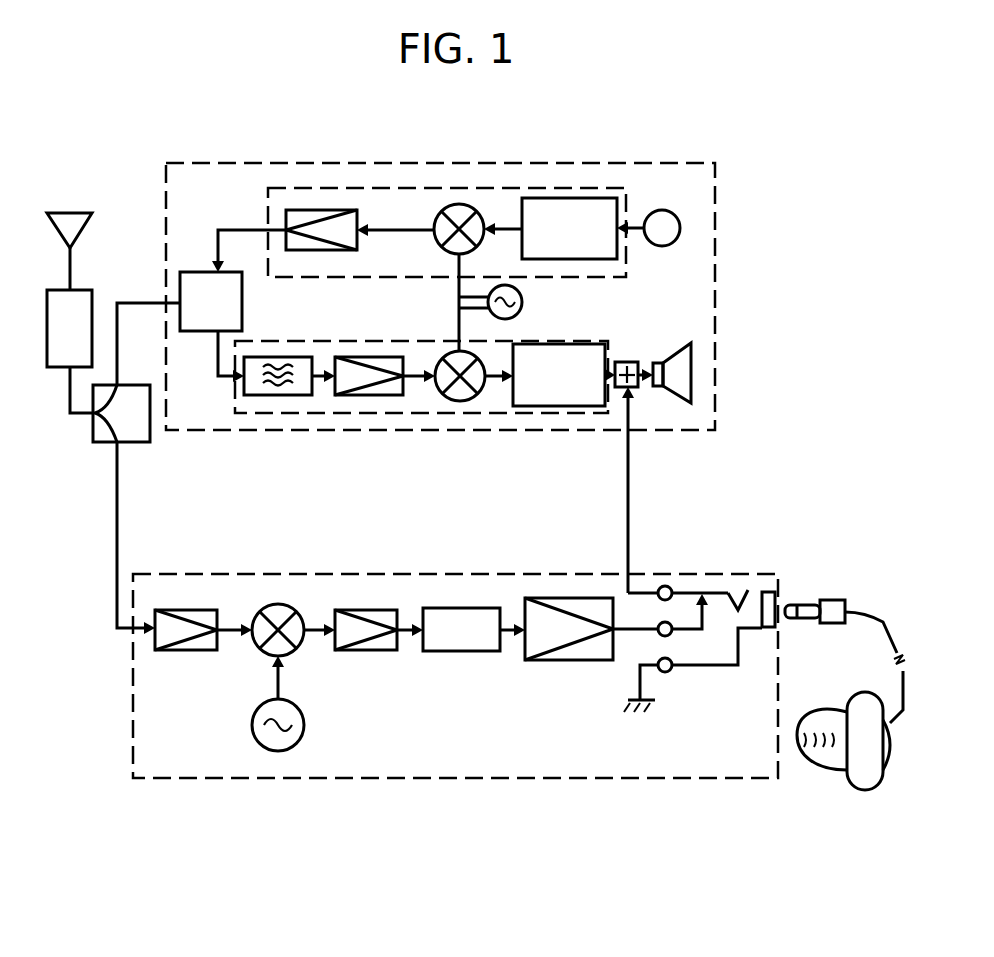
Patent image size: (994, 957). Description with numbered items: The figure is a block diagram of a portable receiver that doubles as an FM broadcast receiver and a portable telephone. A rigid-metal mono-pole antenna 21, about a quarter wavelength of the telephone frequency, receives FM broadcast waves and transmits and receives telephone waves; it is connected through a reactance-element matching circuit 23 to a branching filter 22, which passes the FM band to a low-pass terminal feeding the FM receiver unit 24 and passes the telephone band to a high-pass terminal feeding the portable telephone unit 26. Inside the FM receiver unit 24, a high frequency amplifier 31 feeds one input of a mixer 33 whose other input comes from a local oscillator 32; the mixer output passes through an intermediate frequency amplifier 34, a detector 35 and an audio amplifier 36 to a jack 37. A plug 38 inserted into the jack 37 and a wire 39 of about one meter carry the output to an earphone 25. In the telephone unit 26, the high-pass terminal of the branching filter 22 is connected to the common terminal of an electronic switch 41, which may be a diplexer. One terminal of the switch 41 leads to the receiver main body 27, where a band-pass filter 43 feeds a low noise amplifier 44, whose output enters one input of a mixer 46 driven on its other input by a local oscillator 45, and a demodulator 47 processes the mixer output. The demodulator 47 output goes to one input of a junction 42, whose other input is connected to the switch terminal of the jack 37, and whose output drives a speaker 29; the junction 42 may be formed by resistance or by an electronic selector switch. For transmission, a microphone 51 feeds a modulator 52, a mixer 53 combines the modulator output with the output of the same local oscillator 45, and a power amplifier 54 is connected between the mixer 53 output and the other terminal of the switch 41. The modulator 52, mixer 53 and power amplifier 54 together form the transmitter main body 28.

The antenna 21 is at (63, 211).
The branching filter 22 is at (98, 446).
The matching circuit 23 is at (84, 289).
The FM receiver unit 24 is at (132, 745).
The earphone 25 is at (860, 792).
The portable telephone unit 26 is at (205, 432).
The receiver main body 27 is at (424, 414).
The transmitter main body 28 is at (337, 186).
The speaker 29 is at (692, 370).
The high frequency amplifier 31 is at (153, 636).
The local oscillator 32 is at (279, 752).
The mixer 33 is at (262, 653).
The intermediate frequency amplifier 34 is at (360, 652).
The detector 35 is at (452, 652).
The audio amplifier 36 is at (560, 662).
The jack 37 is at (695, 667).
The plug 38 is at (836, 598).
The wire 39 is at (886, 622).
The switch 41 is at (191, 272).
The junction 42 is at (640, 358).
The band-pass filter 43 is at (280, 398).
The low noise amplifier 44 is at (370, 397).
The local oscillator 45 is at (523, 300).
The mixer 46 is at (461, 403).
The demodulator 47 is at (560, 408).
The microphone 51 is at (661, 210).
The modulator 52 is at (558, 197).
The mixer 53 is at (461, 205).
The power amplifier 54 is at (313, 208).